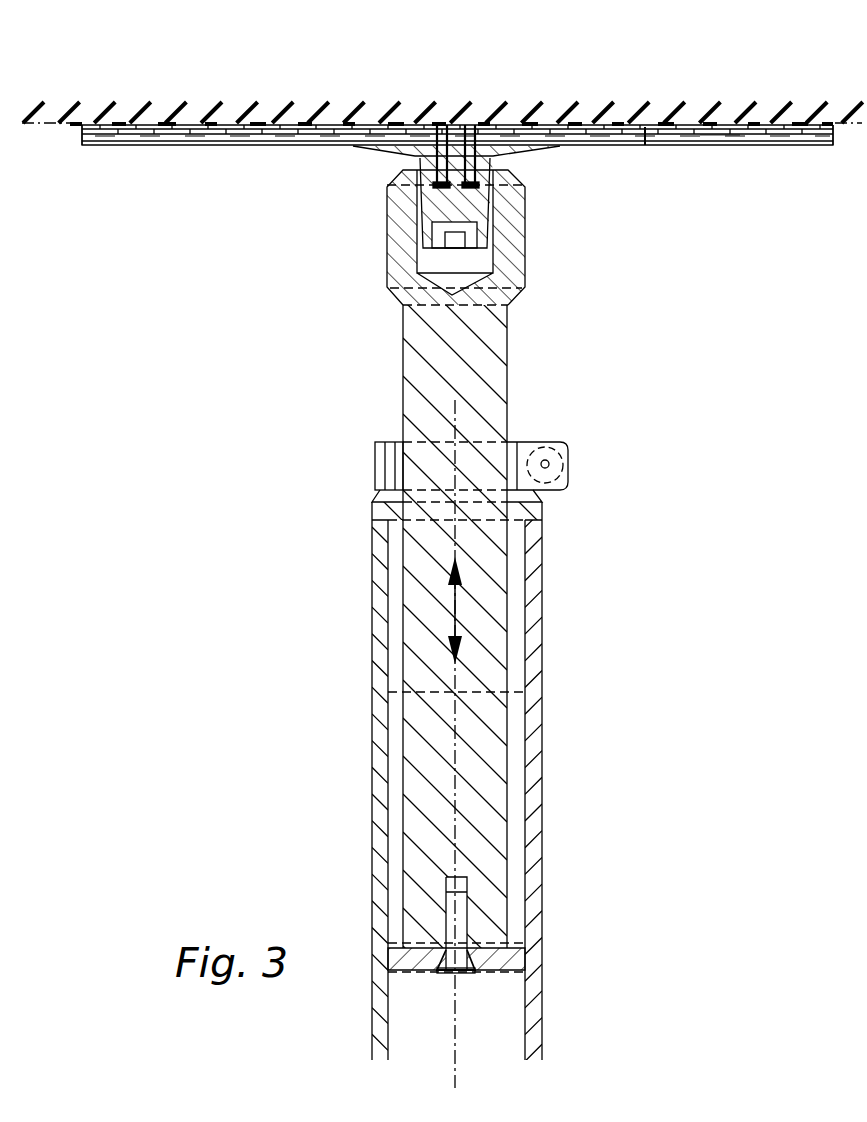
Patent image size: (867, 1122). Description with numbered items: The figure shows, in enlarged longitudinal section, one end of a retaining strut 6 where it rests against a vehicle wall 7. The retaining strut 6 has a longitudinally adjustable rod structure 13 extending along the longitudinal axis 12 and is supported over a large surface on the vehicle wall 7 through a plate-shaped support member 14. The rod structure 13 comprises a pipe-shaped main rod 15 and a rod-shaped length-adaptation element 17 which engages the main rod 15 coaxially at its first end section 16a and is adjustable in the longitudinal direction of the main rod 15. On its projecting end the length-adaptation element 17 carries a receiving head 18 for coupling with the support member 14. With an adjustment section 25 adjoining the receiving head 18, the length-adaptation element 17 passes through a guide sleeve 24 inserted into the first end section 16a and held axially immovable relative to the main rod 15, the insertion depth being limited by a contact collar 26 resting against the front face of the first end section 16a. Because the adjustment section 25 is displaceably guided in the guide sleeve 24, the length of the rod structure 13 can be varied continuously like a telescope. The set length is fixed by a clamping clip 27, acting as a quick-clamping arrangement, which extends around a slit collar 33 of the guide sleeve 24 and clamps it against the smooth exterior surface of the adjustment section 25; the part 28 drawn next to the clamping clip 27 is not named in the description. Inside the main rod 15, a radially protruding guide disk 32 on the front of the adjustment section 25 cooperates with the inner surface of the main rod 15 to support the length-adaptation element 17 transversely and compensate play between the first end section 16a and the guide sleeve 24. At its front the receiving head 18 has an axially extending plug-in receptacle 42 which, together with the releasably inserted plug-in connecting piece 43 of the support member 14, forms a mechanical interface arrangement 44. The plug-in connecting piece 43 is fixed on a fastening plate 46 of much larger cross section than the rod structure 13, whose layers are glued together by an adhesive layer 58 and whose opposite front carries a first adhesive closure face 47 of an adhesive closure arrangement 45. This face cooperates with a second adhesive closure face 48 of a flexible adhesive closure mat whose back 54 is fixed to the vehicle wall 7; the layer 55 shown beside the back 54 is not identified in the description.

The retaining strut 6 is at (563, 672).
The vehicle wall 7 is at (681, 125).
The longitudinal axis 12 is at (465, 803).
The rod structure 13 is at (455, 794).
The support member 14 is at (349, 151).
The main rod 15 is at (535, 885).
The first end section 16a is at (540, 600).
The length-adaptation element 17 is at (500, 372).
The receiving head 18 is at (520, 238).
The guide sleeve 24 is at (392, 572).
The adjustment section 25 is at (487, 775).
The contact collar 26 is at (540, 512).
The clamping clip 27 is at (375, 465).
The bearing block with pin 28 is at (549, 464).
The guide disk 32 is at (520, 960).
The slit collar 33 is at (400, 452).
The plug-in receptacle 42 is at (490, 258).
The plug-in connecting piece 43 is at (480, 210).
The mechanical interface arrangement 44 is at (410, 229).
The adhesive closure arrangement 45 is at (75, 139).
The fastening plate 46 is at (721, 146).
The first adhesive closure face 47 is at (621, 126).
The second adhesive closure face 48 is at (648, 149).
The back 54 is at (327, 124).
The lower panel layer 55 is at (457, 79).
The adhesive layer 58 is at (790, 147).